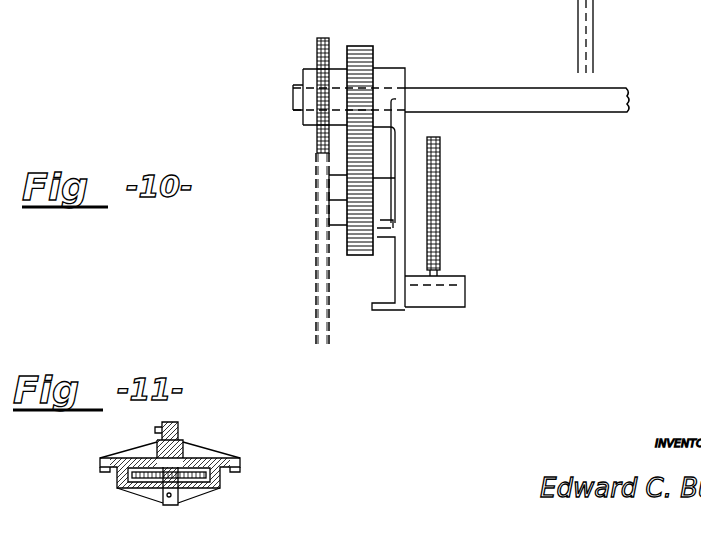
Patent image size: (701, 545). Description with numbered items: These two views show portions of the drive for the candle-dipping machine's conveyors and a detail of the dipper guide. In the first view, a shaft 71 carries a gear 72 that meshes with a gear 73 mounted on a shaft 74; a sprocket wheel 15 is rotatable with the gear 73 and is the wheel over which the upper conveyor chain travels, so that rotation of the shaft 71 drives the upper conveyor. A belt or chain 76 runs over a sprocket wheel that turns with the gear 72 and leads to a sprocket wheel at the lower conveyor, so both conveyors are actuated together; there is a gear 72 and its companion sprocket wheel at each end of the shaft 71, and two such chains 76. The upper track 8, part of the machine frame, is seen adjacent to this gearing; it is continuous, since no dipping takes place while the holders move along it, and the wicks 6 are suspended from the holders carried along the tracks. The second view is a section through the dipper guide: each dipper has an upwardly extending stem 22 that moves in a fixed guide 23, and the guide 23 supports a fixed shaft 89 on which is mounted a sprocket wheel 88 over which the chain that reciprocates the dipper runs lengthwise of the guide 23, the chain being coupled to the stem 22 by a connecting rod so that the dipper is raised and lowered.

In FIG. 10, the gear 72 is at (360, 46).
In FIG. 10, the shaft 71 is at (473, 97).
In FIG. 10, the wicks 6 is at (700, 12).
In FIG. 10, the sprocket wheel 15 is at (441, 158).
In FIG. 10, the shaft 74 is at (325, 200).
In FIG. 10, the gear 73 is at (362, 255).
In FIG. 10, the belt or chain 76 is at (315, 306).
In FIG. 10, the upper track 8 is at (463, 276).
In FIG. 11, the sprocket wheel 88 is at (140, 470).
In FIG. 11, the stem 22 is at (180, 452).
In FIG. 11, the guide 23 is at (215, 458).
In FIG. 11, the fixed shaft 89 is at (168, 506).